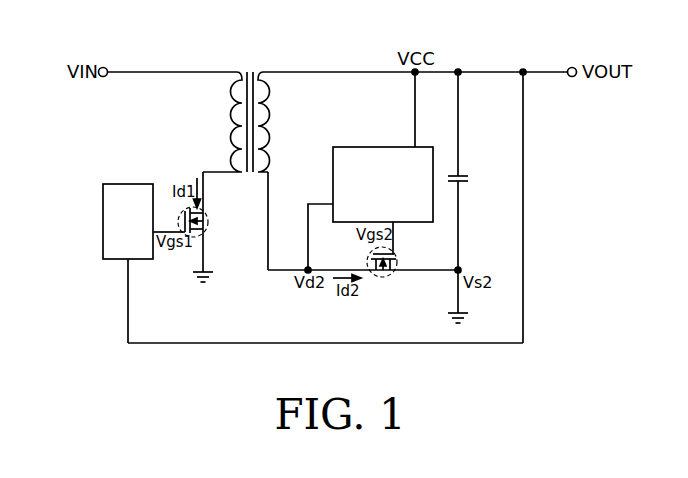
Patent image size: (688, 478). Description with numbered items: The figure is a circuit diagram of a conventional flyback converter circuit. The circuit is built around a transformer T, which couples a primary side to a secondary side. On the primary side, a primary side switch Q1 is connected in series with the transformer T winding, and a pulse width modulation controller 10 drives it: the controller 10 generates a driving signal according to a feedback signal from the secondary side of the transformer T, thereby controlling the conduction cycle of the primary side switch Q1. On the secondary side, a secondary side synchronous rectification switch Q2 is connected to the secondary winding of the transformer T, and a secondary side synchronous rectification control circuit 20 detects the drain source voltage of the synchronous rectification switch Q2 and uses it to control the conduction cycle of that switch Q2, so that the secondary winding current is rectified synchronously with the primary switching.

The pulse width modulation controller 10 is at (133, 184).
The secondary side synchronous rectification control circuit 20 is at (385, 147).
The transformer T is at (236, 97).
The primary side switch Q1 is at (208, 218).
The secondary side synchronous rectification switch Q2 is at (400, 259).